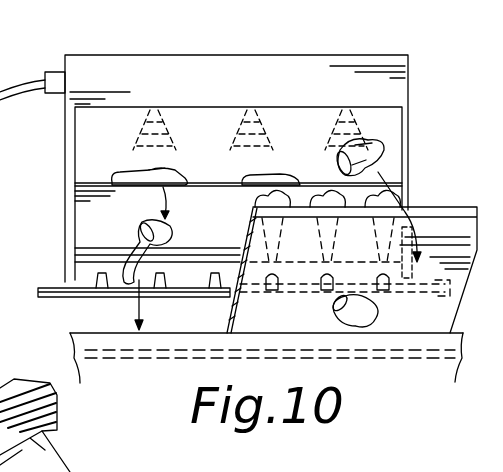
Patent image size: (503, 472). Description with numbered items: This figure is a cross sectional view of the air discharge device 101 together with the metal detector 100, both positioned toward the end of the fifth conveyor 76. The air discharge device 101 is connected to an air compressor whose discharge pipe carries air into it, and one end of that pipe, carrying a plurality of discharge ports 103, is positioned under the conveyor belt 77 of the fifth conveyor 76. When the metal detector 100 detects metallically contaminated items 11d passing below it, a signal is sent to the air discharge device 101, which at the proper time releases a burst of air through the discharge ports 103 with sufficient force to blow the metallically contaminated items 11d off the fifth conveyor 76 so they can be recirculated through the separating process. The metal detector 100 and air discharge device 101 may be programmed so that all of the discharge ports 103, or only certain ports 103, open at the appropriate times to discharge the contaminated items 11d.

The metal detector 100 is at (322, 48).
The fifth conveyor 76 is at (88, 183).
The conveyor belt 77 is at (88, 231).
The air discharge device 101 is at (86, 279).
The discharge ports 103 is at (183, 275).
The metallically contaminated items 11d is at (385, 146).